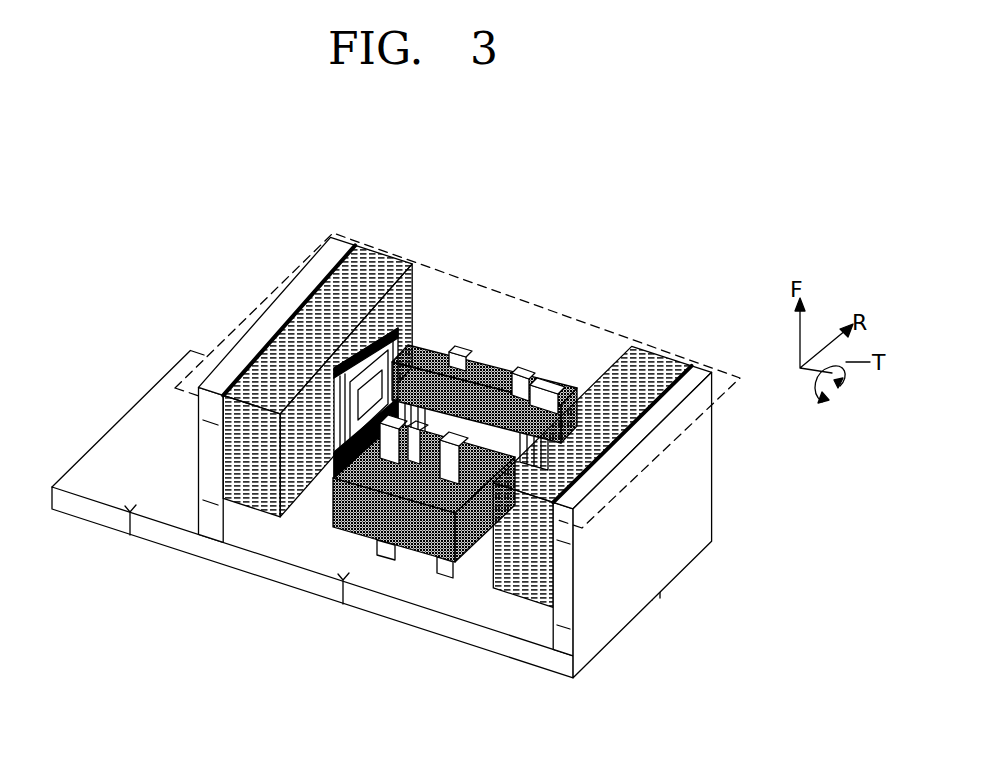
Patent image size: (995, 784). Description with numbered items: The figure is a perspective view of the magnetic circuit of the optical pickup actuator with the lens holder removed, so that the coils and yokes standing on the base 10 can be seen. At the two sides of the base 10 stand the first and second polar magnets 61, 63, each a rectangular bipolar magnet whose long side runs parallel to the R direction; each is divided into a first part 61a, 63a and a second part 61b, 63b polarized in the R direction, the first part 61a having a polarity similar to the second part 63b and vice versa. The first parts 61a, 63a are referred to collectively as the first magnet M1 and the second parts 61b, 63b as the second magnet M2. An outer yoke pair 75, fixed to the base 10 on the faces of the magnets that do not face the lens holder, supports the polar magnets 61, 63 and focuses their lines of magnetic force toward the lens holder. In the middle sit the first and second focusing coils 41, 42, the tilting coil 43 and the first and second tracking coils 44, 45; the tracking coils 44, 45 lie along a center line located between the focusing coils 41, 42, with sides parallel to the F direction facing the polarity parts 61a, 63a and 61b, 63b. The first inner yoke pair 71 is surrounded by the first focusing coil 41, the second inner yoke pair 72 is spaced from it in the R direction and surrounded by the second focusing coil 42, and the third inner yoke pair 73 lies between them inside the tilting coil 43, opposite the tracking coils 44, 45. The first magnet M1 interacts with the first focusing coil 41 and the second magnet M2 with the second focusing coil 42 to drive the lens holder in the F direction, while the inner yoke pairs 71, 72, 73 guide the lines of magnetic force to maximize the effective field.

The base 10 is at (117, 454).
The first focusing coil 41 is at (502, 372).
The second focusing coil 42 is at (360, 567).
The tilting coil 43 is at (402, 560).
The first tracking coil 44 is at (547, 384).
The second tracking coil 45 is at (350, 363).
The first polar magnet 61 is at (602, 441).
The first part of first polar magnet 61a is at (650, 360).
The second part of first polar magnet 61b is at (585, 385).
The second polar magnet 63 is at (266, 384).
The first part of second polar magnet 63a is at (311, 271).
The second part of second polar magnet 63b is at (258, 366).
The first inner yoke pair 71 is at (445, 343).
The second inner yoke pair 72 is at (333, 470).
The third inner yoke pair 73 is at (420, 360).
The outer yoke pair 75 is at (212, 498).
The first magnet M1 is at (700, 410).
The second magnet M2 is at (600, 497).